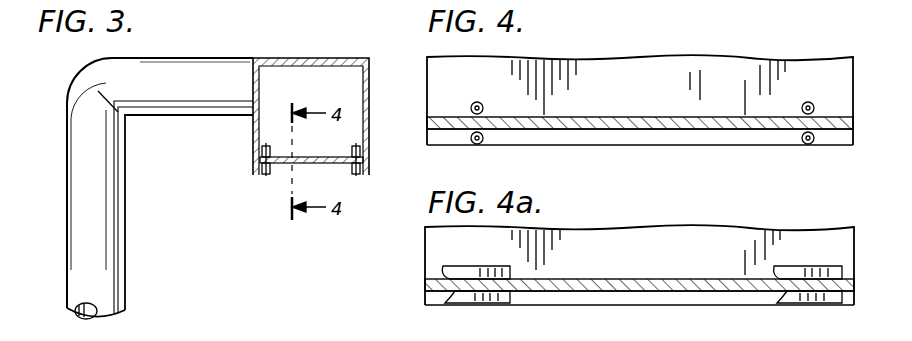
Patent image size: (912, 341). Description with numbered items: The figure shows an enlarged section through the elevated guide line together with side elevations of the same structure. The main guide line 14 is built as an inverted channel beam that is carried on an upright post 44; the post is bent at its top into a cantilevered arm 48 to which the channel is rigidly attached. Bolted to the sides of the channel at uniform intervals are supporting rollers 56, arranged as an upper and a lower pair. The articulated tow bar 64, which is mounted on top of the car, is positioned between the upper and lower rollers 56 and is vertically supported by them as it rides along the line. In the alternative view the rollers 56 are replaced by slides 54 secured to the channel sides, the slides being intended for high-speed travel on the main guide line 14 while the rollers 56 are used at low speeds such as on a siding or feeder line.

In FIG. 3, the main guide line 14 is at (353, 60).
In FIG. 4, the main guide line 14 is at (708, 60).
In FIG. 4A, the main guide line 14 is at (724, 232).
In FIG. 3, the upright post 44 is at (125, 262).
In FIG. 3, the cantilevered arm 48 is at (215, 62).
In FIG. 4A, the slide 54 is at (447, 297).
In FIG. 3, the supporting roller 56 is at (259, 153).
In FIG. 4, the supporting roller 56 is at (470, 133).
In FIG. 3, the articulated tow bar 64 is at (286, 165).
In FIG. 4, the articulated tow bar 64 is at (667, 117).
In FIG. 4A, the articulated tow bar 64 is at (667, 279).